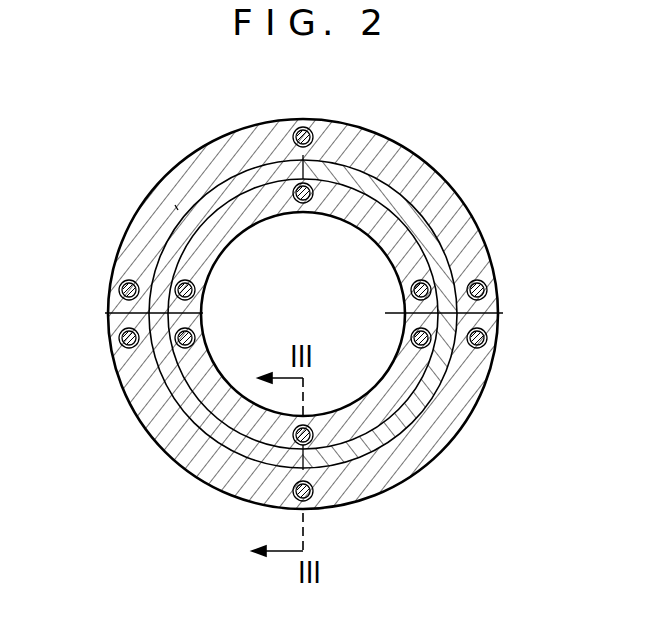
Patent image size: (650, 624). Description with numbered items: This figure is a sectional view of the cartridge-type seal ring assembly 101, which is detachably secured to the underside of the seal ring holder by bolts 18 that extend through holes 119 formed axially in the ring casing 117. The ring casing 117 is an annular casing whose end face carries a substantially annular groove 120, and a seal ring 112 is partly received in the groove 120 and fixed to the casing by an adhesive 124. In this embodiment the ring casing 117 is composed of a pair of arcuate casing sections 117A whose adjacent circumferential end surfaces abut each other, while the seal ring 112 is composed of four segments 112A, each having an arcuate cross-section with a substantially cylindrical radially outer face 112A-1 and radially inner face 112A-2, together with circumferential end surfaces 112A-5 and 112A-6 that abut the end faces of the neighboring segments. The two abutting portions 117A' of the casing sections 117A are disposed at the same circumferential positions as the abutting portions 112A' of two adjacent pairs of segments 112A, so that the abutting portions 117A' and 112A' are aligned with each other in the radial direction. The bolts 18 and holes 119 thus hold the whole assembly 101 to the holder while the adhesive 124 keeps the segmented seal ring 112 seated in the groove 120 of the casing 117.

The seal ring assembly 101 is at (486, 234).
The ring casing 117 is at (164, 164).
The arcuate casing sections 117A is at (319, 318).
The abutting portions of the casing sections 117A' is at (438, 314).
The segments 112A is at (290, 315).
The abutting portions of the segments 112A' is at (380, 314).
The radially outer face 112A-1 is at (178, 210).
The radially inner face 112A-2 is at (230, 243).
The circumferential end surface 112A-5 is at (325, 164).
The circumferential end surface 112A-6 is at (115, 325).
The seal ring 112 is at (192, 430).
The holes 119 is at (124, 284).
The bolts 18 is at (122, 294).
The annular groove 120 is at (418, 413).
The adhesive 124 is at (216, 450).